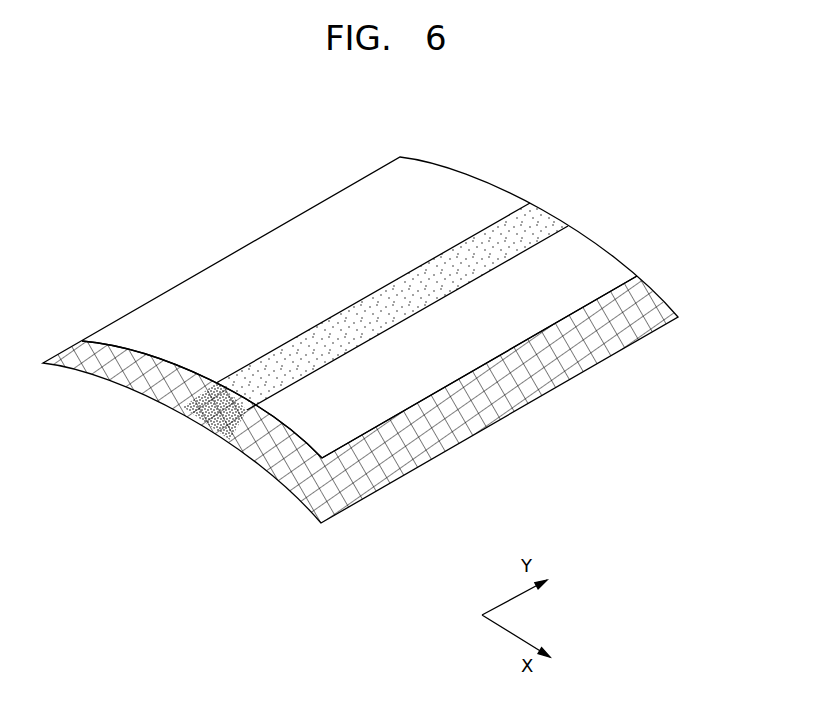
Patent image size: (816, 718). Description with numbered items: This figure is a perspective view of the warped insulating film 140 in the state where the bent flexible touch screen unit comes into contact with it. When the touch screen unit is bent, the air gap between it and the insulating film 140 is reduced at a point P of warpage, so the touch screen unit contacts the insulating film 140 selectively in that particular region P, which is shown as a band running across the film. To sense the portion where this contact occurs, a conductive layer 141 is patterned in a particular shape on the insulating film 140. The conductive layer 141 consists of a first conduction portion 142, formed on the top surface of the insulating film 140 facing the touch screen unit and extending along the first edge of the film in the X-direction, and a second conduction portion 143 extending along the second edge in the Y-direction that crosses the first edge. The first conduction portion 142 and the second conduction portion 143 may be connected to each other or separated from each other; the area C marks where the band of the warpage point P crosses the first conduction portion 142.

The insulating film 140 is at (612, 237).
The conductive layer 141 is at (466, 506).
The first conduction portion 142 is at (287, 462).
The second conduction portion 143 is at (413, 452).
The point of warpage P is at (428, 262).
The curved region of strip C is at (197, 397).